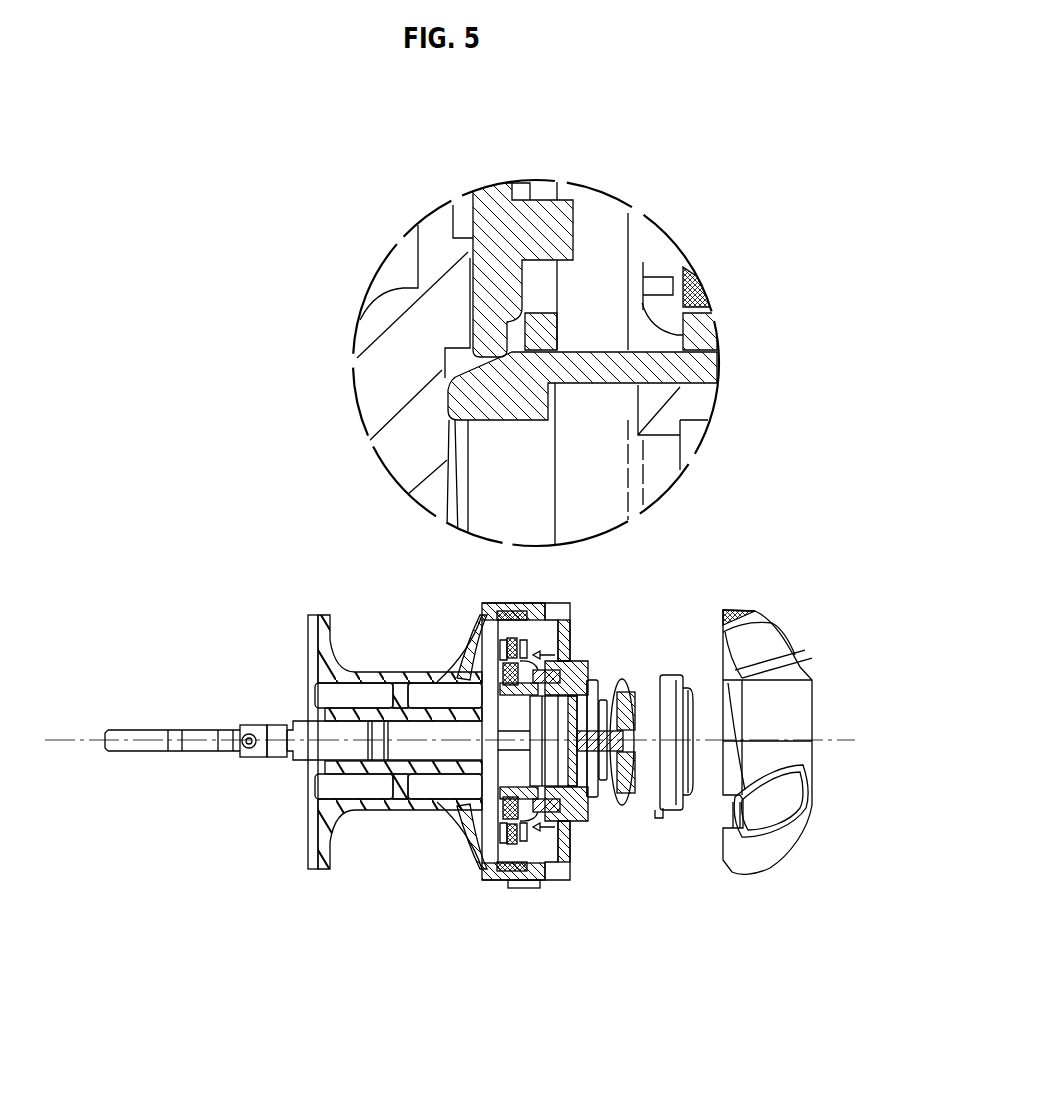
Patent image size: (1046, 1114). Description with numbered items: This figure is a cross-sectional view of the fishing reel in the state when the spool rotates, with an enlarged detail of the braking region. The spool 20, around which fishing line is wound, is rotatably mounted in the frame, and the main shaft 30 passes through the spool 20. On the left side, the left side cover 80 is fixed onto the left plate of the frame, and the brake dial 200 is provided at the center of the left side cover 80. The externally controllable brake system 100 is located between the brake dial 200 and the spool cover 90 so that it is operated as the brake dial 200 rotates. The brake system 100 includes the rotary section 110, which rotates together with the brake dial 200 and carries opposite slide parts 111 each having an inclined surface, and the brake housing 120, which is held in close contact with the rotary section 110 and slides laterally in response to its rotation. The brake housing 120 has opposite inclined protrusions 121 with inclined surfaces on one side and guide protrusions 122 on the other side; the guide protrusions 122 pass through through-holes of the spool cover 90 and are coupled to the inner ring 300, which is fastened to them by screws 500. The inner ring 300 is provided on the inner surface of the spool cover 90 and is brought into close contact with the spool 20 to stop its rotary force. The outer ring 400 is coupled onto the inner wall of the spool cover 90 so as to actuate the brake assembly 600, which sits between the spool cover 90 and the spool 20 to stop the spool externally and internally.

The spool 20 is at (390, 342).
The main shaft 30 is at (460, 797).
The left side cover 80 is at (778, 843).
The spool cover 90 is at (560, 870).
The externally controllable brake system 100 is at (637, 575).
The rotary section 110 is at (633, 690).
The slide parts 111 is at (638, 812).
The brake housing 120 is at (598, 680).
The inclined protrusions 121 is at (590, 797).
The guide protrusions 122 is at (543, 858).
The brake dial 200 is at (686, 672).
The inner ring 300 is at (467, 673).
The outer ring 400 is at (456, 508).
The screws 500 is at (643, 262).
The brake assembly 600 is at (579, 222).